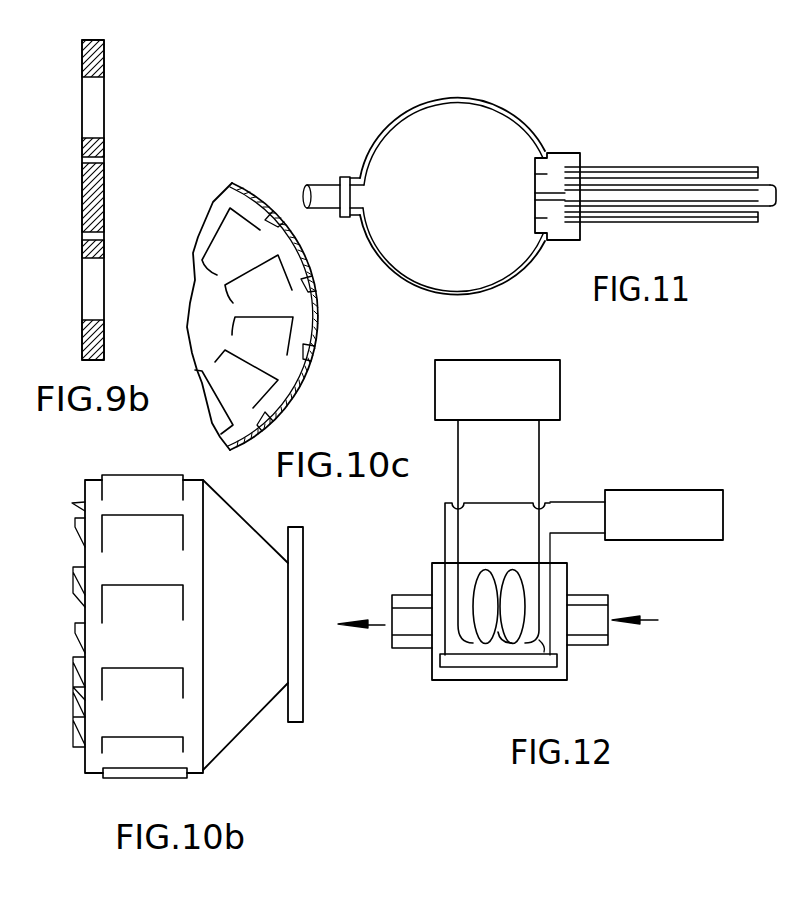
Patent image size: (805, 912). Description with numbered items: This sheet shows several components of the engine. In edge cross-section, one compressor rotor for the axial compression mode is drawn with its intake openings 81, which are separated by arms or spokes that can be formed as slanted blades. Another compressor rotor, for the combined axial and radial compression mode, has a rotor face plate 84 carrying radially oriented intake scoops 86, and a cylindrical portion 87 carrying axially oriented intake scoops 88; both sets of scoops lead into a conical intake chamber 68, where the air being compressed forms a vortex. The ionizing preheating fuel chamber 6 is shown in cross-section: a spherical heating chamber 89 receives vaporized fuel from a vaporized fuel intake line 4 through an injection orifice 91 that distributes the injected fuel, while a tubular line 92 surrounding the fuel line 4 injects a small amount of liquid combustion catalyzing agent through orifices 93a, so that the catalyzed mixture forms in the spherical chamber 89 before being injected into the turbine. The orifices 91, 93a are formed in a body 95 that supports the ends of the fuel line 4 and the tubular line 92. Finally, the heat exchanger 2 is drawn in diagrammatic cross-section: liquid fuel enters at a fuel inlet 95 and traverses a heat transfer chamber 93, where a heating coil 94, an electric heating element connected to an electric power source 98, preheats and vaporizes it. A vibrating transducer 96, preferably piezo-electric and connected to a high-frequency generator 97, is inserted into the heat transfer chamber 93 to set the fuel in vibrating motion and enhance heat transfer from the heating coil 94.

In FIG. 9B, the intake openings 81 is at (95, 102).
In FIG. 10B, the cylindrical portion 87 is at (127, 492).
In FIG. 10B, the axially oriented intake scoops 88 is at (182, 532).
In FIG. 10B, the radially oriented intake scoops 86 is at (73, 585).
In FIG. 10B, the rotor face plate 84 is at (92, 618).
In FIG. 10B, the conical intake chamber 68 is at (259, 650).
In FIG. 11, the ionizing preheating fuel chamber 6 is at (513, 108).
In FIG. 11, the spherical heating chamber 89 is at (452, 152).
In FIG. 11, the orifices 93a is at (535, 178).
In FIG. 11, the injection orifice 91 is at (535, 197).
In FIG. 11, the body 95 is at (560, 152).
In FIG. 12, the body 95 is at (651, 621).
In FIG. 11, the tubular line 92 is at (665, 167).
In FIG. 11, the vaporized fuel intake line 4 is at (776, 186).
In FIG. 12, the electric power source 98 is at (536, 355).
In FIG. 12, the high-frequency generator 97 is at (640, 490).
In FIG. 12, the heat transfer chamber 93 is at (478, 572).
In FIG. 12, the heat exchanger 2 is at (510, 562).
In FIG. 12, the vibrating transducer 96 is at (463, 667).
In FIG. 12, the heating coil 94 is at (546, 650).